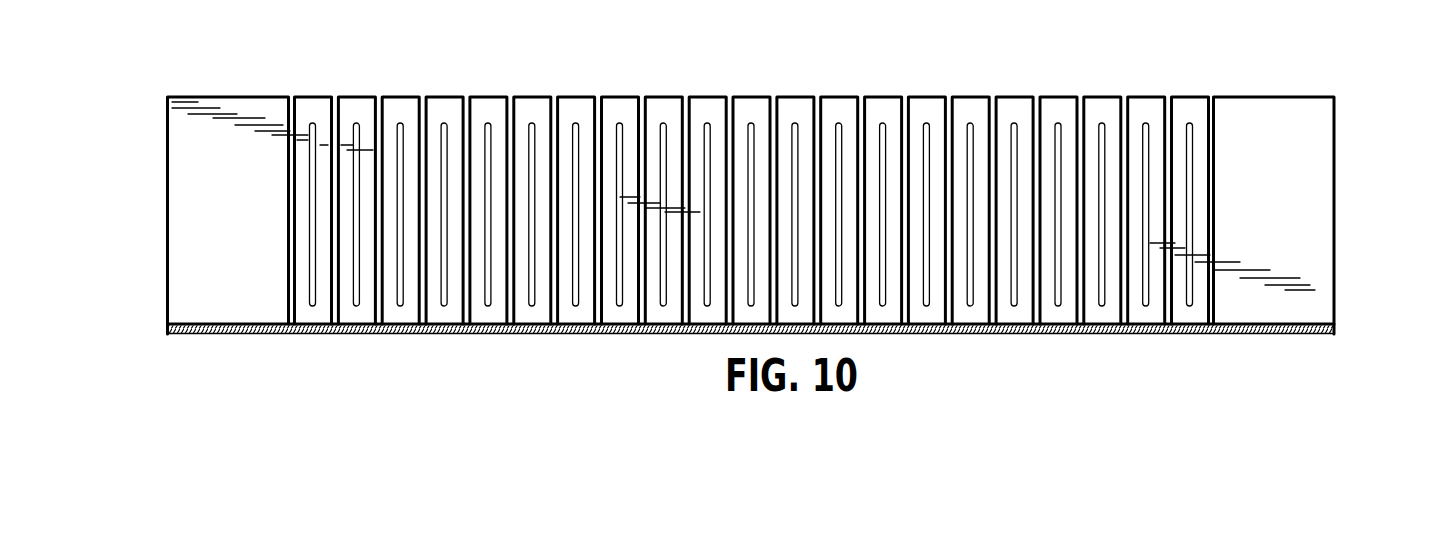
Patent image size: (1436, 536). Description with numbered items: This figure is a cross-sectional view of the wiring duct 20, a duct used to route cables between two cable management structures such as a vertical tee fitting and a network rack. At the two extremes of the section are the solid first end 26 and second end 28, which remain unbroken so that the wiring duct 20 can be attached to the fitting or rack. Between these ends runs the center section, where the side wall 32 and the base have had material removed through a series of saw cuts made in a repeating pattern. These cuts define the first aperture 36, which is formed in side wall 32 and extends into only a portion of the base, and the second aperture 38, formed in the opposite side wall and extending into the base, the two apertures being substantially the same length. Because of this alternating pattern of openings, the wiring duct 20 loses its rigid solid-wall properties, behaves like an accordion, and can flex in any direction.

The wiring duct 20 is at (370, 70).
The first end 26 is at (1292, 203).
The second end 28 is at (225, 203).
The side wall 32 is at (652, 114).
The first aperture 36 is at (684, 110).
The second aperture 38 is at (662, 305).